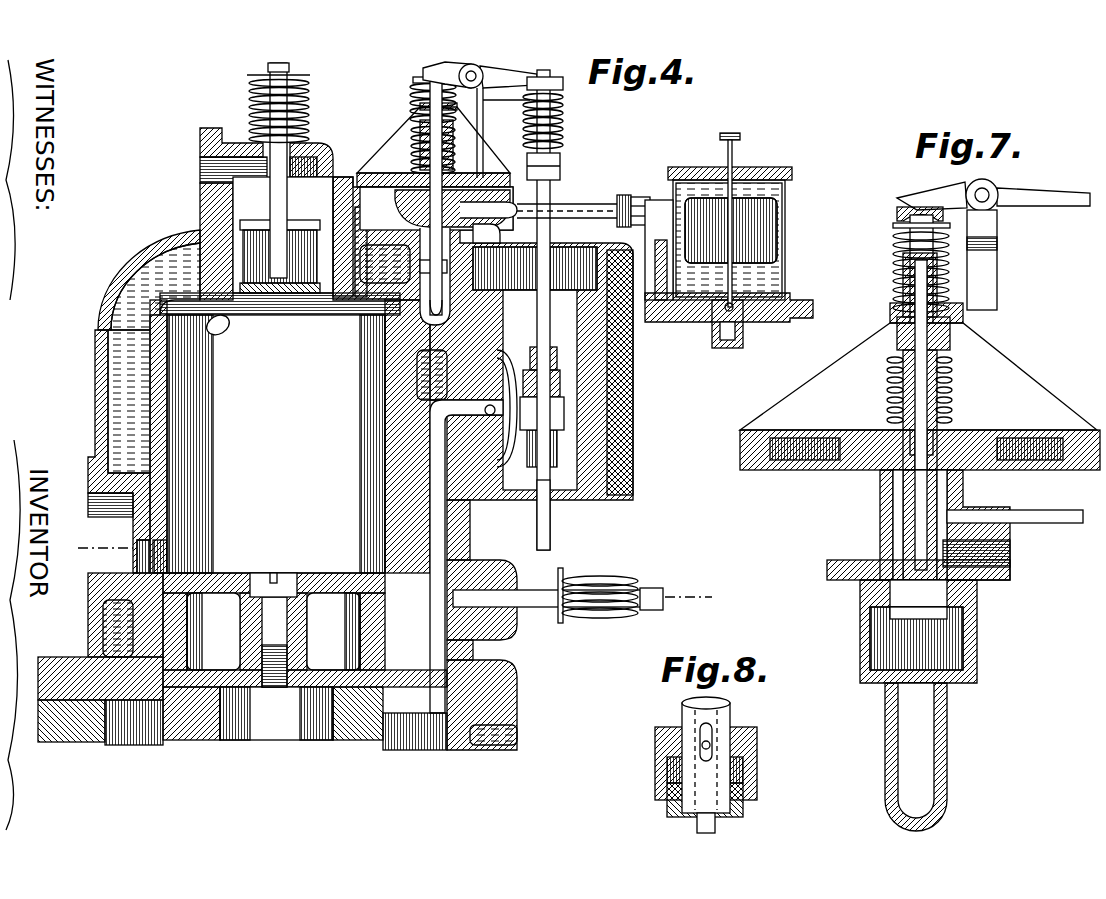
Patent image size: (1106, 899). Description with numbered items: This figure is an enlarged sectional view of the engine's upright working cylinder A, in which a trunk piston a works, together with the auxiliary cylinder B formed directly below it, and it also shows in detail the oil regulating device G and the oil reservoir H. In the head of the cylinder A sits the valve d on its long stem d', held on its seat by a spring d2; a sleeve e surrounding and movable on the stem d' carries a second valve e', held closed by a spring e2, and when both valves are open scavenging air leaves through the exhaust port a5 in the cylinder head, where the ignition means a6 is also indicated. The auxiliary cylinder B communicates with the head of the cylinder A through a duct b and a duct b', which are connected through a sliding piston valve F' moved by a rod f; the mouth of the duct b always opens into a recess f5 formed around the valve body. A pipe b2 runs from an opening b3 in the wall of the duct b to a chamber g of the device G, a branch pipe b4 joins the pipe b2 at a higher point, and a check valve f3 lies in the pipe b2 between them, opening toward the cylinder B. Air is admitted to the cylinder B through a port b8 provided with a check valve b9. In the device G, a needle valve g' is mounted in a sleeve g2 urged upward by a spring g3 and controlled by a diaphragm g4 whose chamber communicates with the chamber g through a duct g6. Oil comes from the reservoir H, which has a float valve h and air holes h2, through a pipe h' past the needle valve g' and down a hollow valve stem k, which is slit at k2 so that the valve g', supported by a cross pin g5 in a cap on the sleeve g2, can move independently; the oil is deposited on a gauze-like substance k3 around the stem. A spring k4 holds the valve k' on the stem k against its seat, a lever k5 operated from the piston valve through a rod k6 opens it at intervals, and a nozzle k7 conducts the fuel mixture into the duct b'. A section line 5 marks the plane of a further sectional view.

In FIG. 4, the exhaust port a5 is at (201, 166).
In FIG. 4, the valve stem d' is at (144, 388).
In FIG. 4, the spring d2 is at (302, 84).
In FIG. 4, the spring e2 is at (300, 94).
In FIG. 4, the valve e' is at (321, 216).
In FIG. 4, the sleeve e is at (280, 178).
In FIG. 4, the ignition means a6 is at (228, 331).
In FIG. 4, the valve d is at (280, 341).
In FIG. 4, the duct b' is at (369, 436).
In FIG. 4, the working cylinder A is at (267, 436).
In FIG. 4, the trunk piston a is at (313, 578).
In FIG. 4, the section line 5 is at (393, 578).
In FIG. 4, the lever k5 is at (503, 73).
In FIG. 7, the lever k5 is at (1043, 192).
In FIG. 4, the carbureter and oil controlling device G is at (395, 143).
In FIG. 4, the diaphragm g4 is at (470, 175).
In FIG. 7, the diaphragm g4 is at (1030, 437).
In FIG. 4, the duct g6 is at (430, 206).
In FIG. 7, the duct g6 is at (893, 514).
In FIG. 4, the chamber g is at (491, 205).
In FIG. 4, the rod k6 is at (552, 197).
In FIG. 4, the oil pipe h' is at (583, 198).
In FIG. 7, the oil pipe h' is at (1013, 526).
In FIG. 4, the pipe b2 is at (492, 238).
In FIG. 4, the branch pipe b4 is at (518, 332).
In FIG. 4, the air holes h2 is at (756, 167).
In FIG. 4, the float valve h is at (742, 191).
In FIG. 4, the oil reservoir H is at (787, 201).
In FIG. 4, the check valve f3 is at (631, 343).
In FIG. 4, the valve chamber F' is at (573, 368).
In FIG. 4, the opening b3 is at (556, 415).
In FIG. 4, the recess f5 is at (540, 440).
In FIG. 4, the duct b is at (466, 556).
In FIG. 4, the check valve b9 is at (478, 560).
In FIG. 4, the rod f is at (549, 533).
In FIG. 4, the port b8 is at (501, 631).
In FIG. 4, the auxiliary cylinder B is at (413, 736).
In FIG. 7, the spring k4 is at (895, 267).
In FIG. 7, the cross pin g5 is at (912, 330).
In FIG. 8, the cross pin g5 is at (709, 747).
In FIG. 7, the slit k2 is at (915, 325).
In FIG. 8, the slit k2 is at (701, 731).
In FIG. 7, the sleeve g2 is at (890, 393).
In FIG. 8, the sleeve g2 is at (741, 813).
In FIG. 7, the spring g3 is at (944, 390).
In FIG. 7, the hollow valve stem k is at (884, 388).
In FIG. 7, the needle valve g' is at (945, 525).
In FIG. 8, the needle valve g' is at (662, 827).
In FIG. 7, the gauze-like substance k3 is at (867, 598).
In FIG. 7, the valve k' is at (944, 638).
In FIG. 7, the nozzle k7 is at (887, 754).